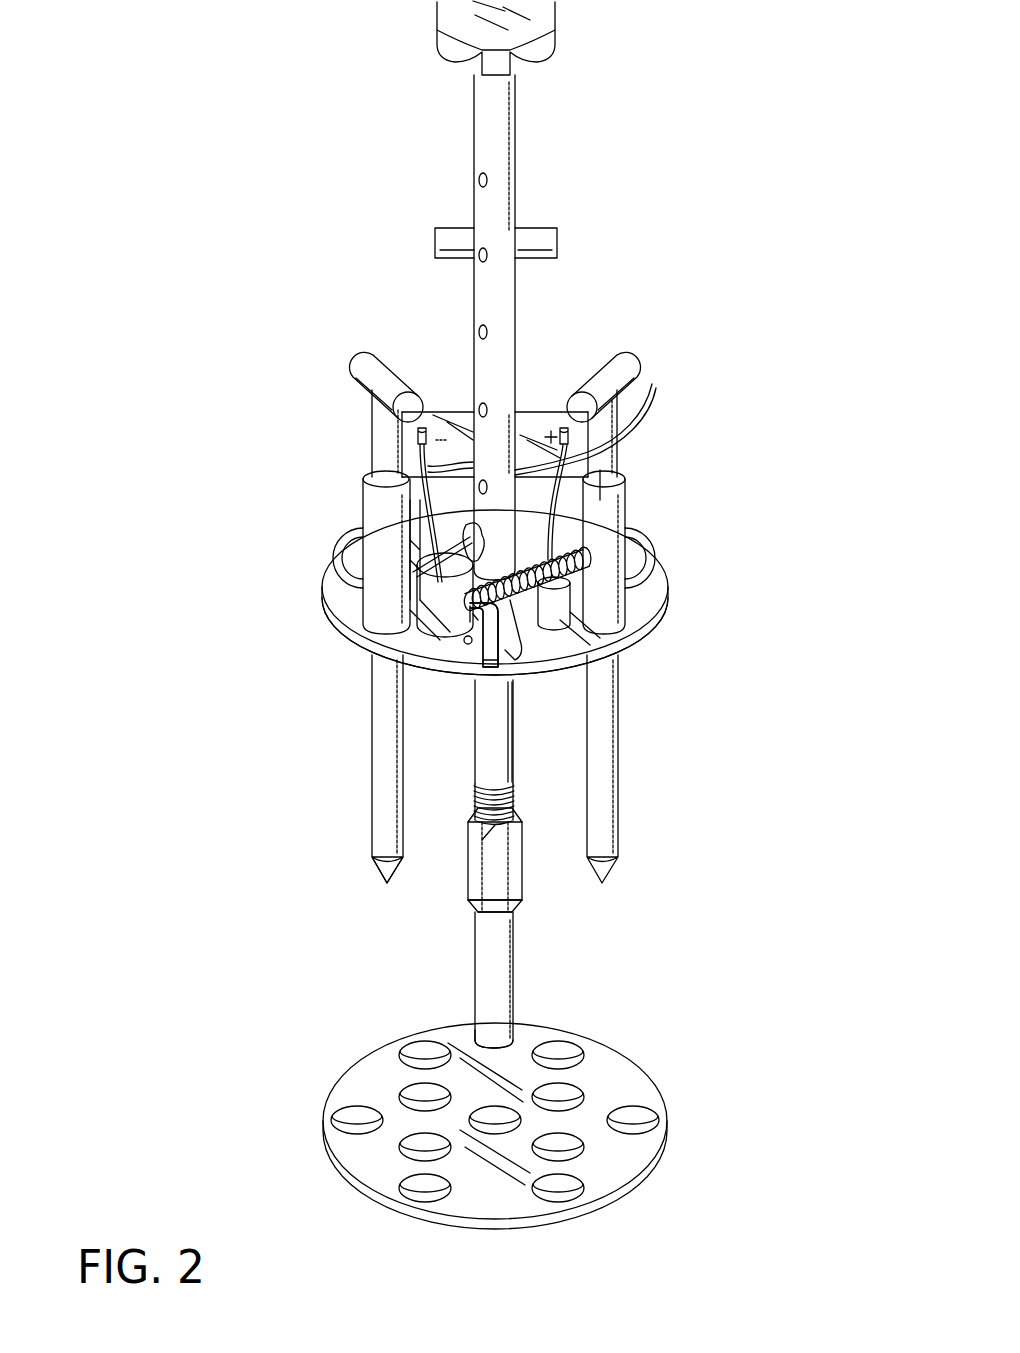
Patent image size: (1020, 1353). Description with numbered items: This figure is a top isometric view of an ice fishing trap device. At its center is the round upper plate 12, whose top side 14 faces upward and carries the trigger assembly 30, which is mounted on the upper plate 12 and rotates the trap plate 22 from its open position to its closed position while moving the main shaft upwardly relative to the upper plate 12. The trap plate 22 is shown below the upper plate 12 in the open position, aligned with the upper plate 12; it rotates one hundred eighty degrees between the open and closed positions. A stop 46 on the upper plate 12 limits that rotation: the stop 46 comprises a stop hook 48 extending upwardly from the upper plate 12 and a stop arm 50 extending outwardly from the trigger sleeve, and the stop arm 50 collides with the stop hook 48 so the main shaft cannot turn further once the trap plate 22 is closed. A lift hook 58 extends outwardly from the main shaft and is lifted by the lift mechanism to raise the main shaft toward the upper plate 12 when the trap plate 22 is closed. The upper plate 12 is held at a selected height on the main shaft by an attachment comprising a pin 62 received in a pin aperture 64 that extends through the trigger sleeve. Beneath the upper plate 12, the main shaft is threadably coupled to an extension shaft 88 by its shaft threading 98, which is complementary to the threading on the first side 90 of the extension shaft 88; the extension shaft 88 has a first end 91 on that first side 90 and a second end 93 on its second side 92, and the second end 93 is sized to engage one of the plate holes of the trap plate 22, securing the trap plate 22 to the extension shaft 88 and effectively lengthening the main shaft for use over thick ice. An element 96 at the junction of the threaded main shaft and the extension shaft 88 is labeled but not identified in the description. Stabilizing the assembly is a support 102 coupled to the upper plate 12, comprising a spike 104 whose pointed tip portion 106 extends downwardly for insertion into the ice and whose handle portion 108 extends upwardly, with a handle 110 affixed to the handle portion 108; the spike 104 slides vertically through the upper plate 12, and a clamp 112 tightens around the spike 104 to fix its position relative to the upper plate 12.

The upper plate 12 is at (647, 617).
The top side 14 is at (652, 578).
The trap plate 22 is at (634, 1097).
The trigger assembly 30 is at (570, 355).
The stop 46 is at (505, 660).
The stop hook 48 is at (540, 645).
The stop arm 50 is at (465, 640).
The pin 62 is at (465, 640).
The lift hook 58 is at (432, 603).
The pin aperture 64 is at (476, 618).
The extension shaft 88 is at (497, 965).
The first side 90 is at (443, 938).
The first end 91 is at (512, 905).
The second side 92 is at (437, 1015).
The second end 93 is at (517, 1020).
The nut 96 is at (472, 912).
The shaft threading 98 is at (523, 806).
The support 102 is at (357, 790).
The spike 104 is at (383, 792).
The tip portion 106 is at (377, 860).
The handle portion 108 is at (382, 427).
The handle 110 is at (368, 362).
The clamp 112 is at (345, 542).